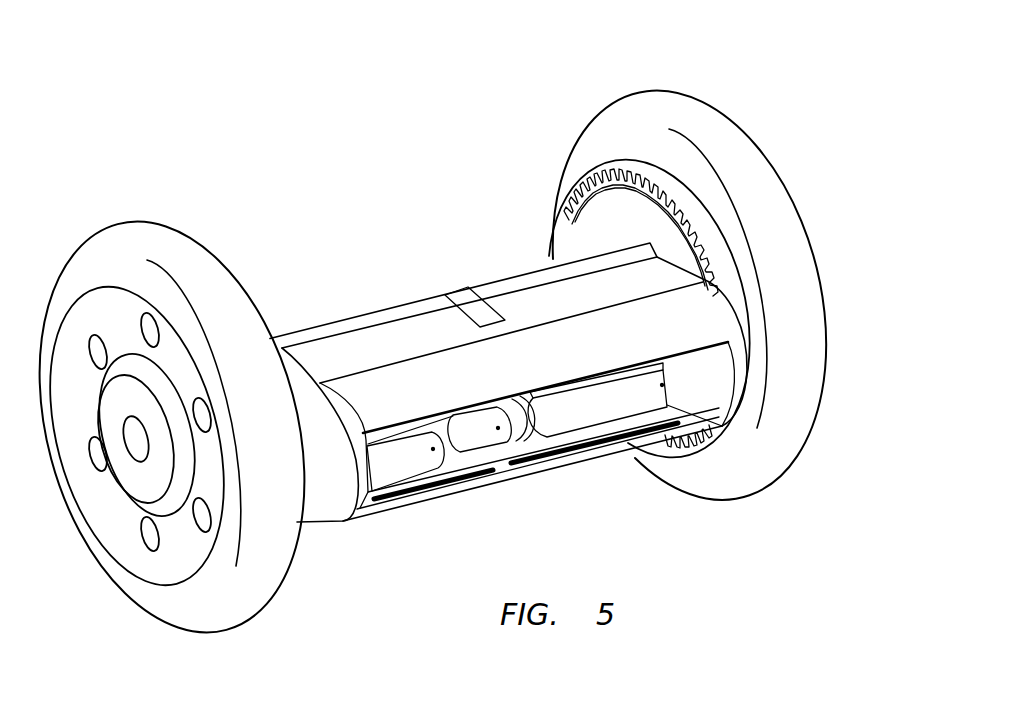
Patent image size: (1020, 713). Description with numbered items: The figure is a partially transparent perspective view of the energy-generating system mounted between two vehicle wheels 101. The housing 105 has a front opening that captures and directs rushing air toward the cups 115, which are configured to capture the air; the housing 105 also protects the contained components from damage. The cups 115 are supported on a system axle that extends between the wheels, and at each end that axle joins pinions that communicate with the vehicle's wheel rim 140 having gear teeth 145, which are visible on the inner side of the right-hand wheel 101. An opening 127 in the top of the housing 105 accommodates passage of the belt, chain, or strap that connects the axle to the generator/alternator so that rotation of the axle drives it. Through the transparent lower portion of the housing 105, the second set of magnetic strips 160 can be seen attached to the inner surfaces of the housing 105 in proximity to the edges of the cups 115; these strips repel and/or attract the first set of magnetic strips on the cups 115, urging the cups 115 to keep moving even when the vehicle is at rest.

The vehicle wheel 101 is at (745, 110).
The housing 105 is at (338, 353).
The cup 115 is at (600, 417).
The opening 127 is at (477, 308).
The wheel rim 140 is at (147, 6).
The gear teeth 145 is at (637, 172).
The second set of magnetic strips 160 is at (406, 497).